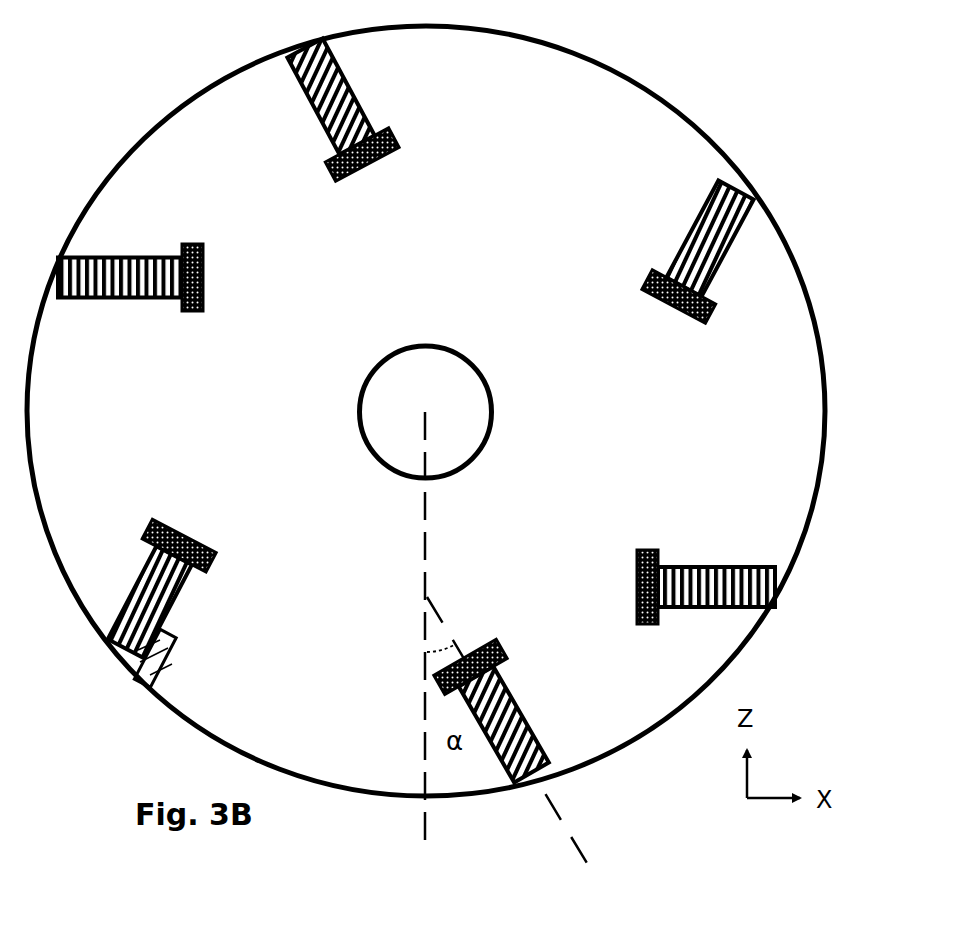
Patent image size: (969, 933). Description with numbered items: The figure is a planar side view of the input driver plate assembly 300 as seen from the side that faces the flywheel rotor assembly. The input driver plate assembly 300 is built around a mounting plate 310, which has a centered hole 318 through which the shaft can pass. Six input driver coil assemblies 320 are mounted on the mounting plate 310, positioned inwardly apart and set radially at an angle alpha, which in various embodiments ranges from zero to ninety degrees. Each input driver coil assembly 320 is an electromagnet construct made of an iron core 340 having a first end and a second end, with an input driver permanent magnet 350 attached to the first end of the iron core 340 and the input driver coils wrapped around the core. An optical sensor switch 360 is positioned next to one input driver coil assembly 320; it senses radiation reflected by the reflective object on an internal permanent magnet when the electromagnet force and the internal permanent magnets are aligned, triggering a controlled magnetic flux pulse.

The input driver plate assembly 300 is at (733, 105).
The mounting plate 310 is at (472, 249).
The centered hole 318 is at (488, 385).
The input driver coil assembly 320 is at (186, 503).
The iron core 340 is at (700, 212).
The input driver permanent magnet 350 is at (400, 143).
The optical sensor switch 360 is at (168, 655).